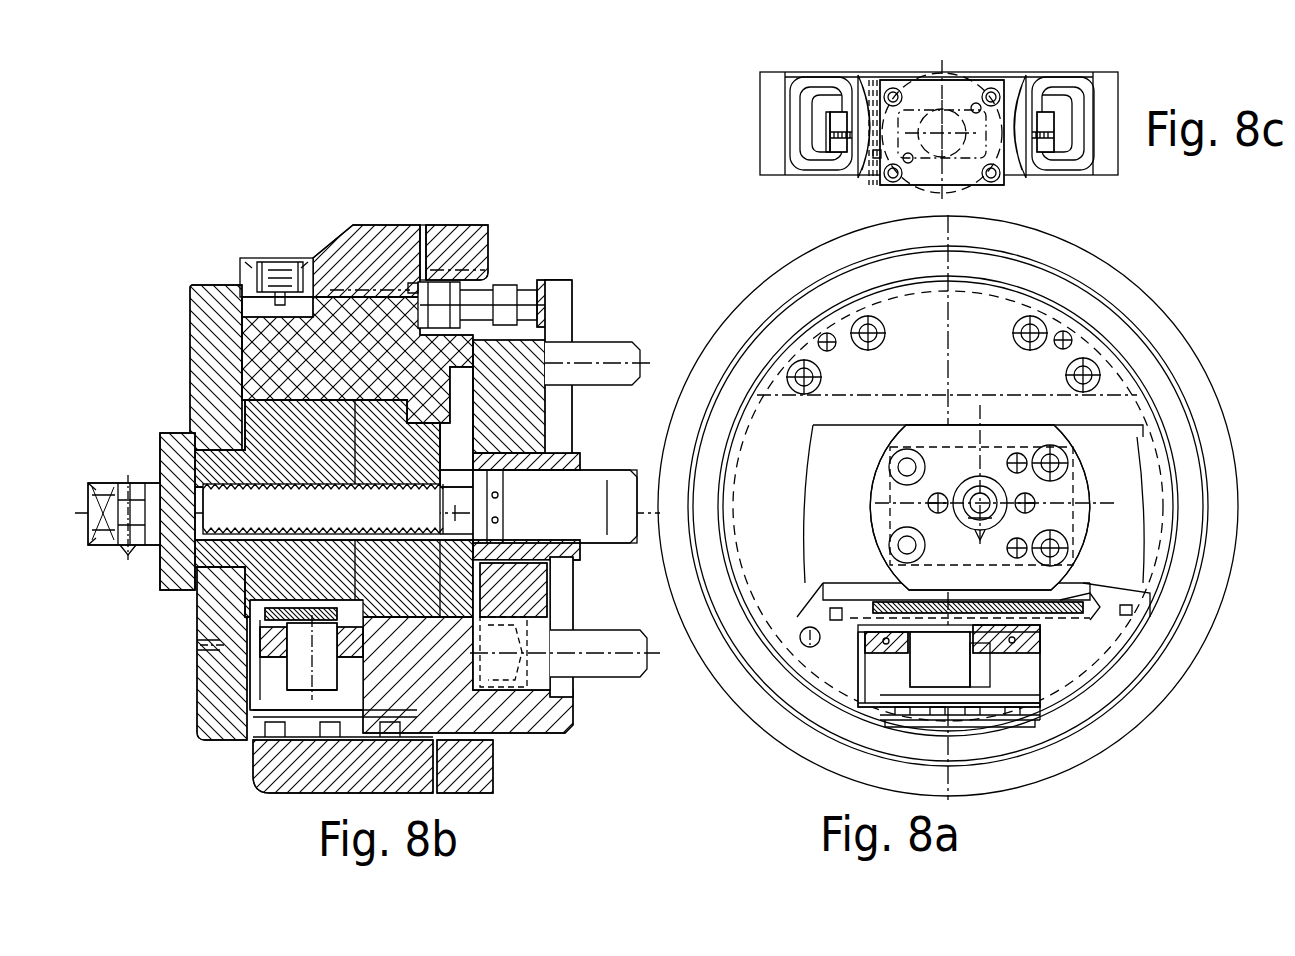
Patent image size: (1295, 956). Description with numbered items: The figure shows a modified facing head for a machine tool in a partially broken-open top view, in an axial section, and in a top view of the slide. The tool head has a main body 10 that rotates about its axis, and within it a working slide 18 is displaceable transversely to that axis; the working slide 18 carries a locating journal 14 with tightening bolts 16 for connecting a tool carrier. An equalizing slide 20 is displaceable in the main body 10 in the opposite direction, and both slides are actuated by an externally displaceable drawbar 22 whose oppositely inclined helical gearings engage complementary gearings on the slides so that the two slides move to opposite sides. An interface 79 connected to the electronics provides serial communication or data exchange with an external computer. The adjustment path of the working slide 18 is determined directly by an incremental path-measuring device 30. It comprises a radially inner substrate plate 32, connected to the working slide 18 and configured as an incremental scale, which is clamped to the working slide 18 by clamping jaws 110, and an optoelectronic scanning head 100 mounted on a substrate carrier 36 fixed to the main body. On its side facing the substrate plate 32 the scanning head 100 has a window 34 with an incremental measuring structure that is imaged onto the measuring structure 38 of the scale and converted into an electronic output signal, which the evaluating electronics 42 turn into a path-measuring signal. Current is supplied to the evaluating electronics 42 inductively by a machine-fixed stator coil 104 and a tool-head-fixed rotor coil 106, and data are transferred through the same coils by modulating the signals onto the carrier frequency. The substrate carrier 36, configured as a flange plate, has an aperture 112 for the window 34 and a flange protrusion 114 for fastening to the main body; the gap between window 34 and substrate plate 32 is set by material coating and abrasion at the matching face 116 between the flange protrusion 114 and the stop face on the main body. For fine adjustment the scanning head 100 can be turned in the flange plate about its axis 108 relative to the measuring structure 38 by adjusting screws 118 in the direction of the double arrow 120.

In FIG. 8b, the main body 10 is at (362, 322).
In FIG. 8a, the main body 10 is at (917, 318).
In FIG. 8b, the locating journal 14 is at (95, 490).
In FIG. 8a, the locating journal 14 is at (985, 480).
In FIG. 8b, the tightening bolts 16 is at (125, 546).
In FIG. 8b, the working slide 18 is at (190, 343).
In FIG. 8a, the working slide 18 is at (987, 437).
In FIG. 8b, the equalizing slide 20 is at (292, 322).
In FIG. 8b, the drawbar 22 is at (165, 460).
In FIG. 8b, the incremental path-measuring device 30 is at (262, 683).
In FIG. 8a, the incremental path-measuring device 30 is at (915, 660).
In FIG. 8b, the substrate plate 32 is at (247, 600).
In FIG. 8c, the substrate plate 32 is at (830, 118).
In FIG. 8a, the substrate plate 32 is at (1080, 590).
In FIG. 8b, the window 34 is at (250, 614).
In FIG. 8c, the window 34 is at (950, 180).
In FIG. 8a, the window 34 is at (975, 668).
In FIG. 8b, the substrate carrier 36 is at (262, 650).
In FIG. 8a, the substrate carrier 36 is at (863, 647).
In FIG. 8c, the measuring structure 38 is at (830, 147).
In FIG. 8b, the evaluating electronics 42 is at (348, 713).
In FIG. 8a, the evaluating electronics 42 is at (945, 727).
In FIG. 8b, the interface 79 is at (278, 262).
In FIG. 8b, the optoelectronic scanning head 100 is at (260, 760).
In FIG. 8c, the optoelectronic scanning head 100 is at (905, 178).
In FIG. 8a, the optoelectronic scanning head 100 is at (1010, 720).
In FIG. 8b, the stator coil 104 is at (450, 262).
In FIG. 8b, the rotor coil 106 is at (403, 250).
In FIG. 8b, the axis 108 is at (300, 710).
In FIG. 8a, the axis 108 is at (925, 705).
In FIG. 8c, the clamping jaws 110 is at (848, 80).
In FIG. 8a, the aperture 112 is at (900, 585).
In FIG. 8a, the flange protrusion 114 is at (858, 640).
In FIG. 8a, the matching face 116 is at (870, 608).
In FIG. 8c, the adjusting screws 118 is at (855, 170).
In FIG. 8a, the adjusting screws 118 is at (887, 648).
In FIG. 8c, the double arrow 120 is at (940, 172).